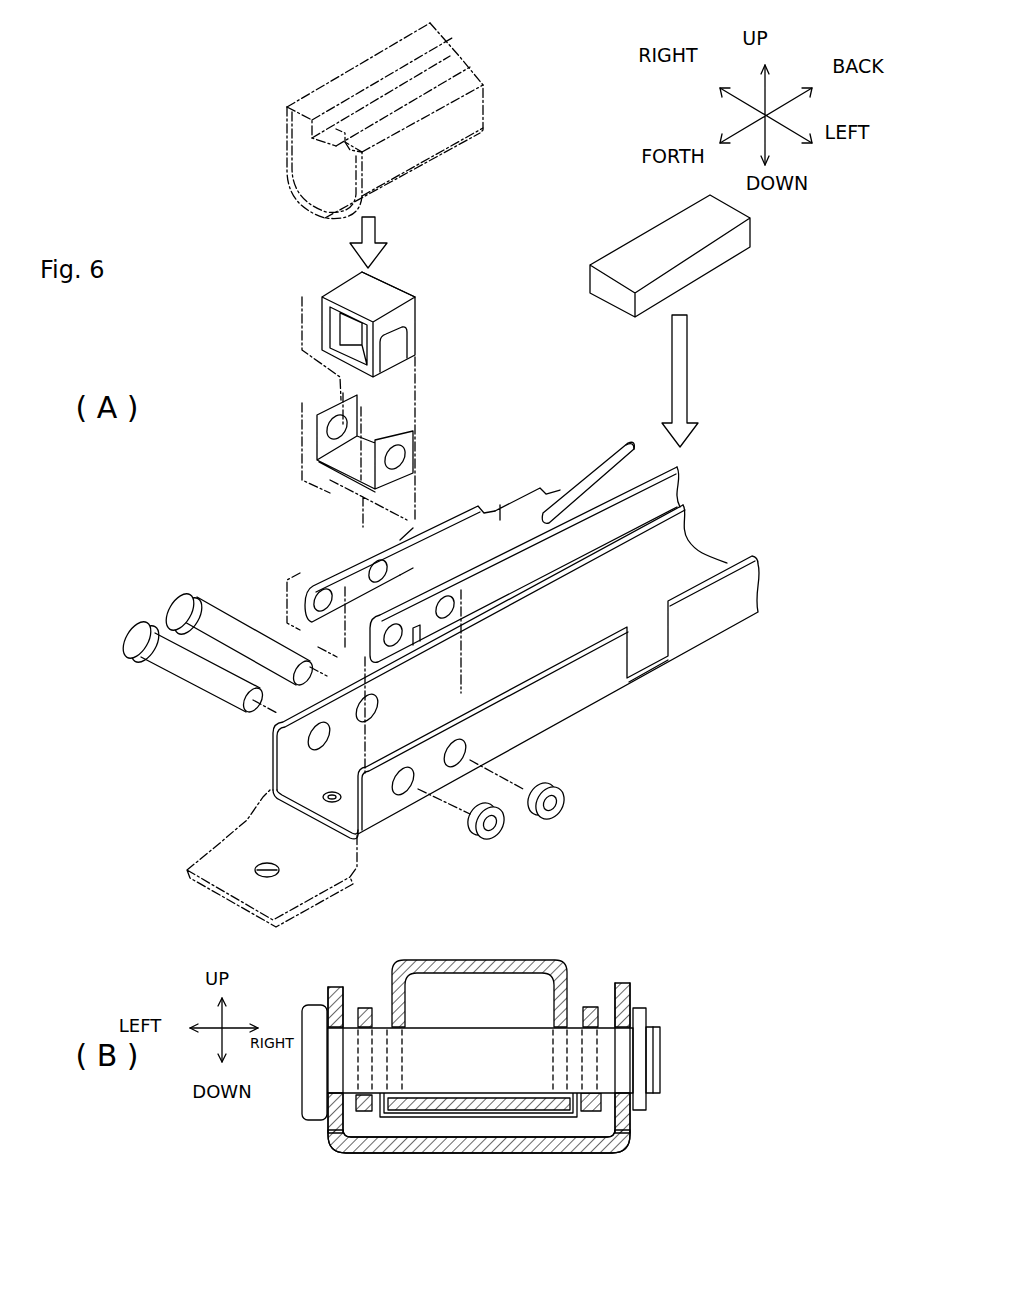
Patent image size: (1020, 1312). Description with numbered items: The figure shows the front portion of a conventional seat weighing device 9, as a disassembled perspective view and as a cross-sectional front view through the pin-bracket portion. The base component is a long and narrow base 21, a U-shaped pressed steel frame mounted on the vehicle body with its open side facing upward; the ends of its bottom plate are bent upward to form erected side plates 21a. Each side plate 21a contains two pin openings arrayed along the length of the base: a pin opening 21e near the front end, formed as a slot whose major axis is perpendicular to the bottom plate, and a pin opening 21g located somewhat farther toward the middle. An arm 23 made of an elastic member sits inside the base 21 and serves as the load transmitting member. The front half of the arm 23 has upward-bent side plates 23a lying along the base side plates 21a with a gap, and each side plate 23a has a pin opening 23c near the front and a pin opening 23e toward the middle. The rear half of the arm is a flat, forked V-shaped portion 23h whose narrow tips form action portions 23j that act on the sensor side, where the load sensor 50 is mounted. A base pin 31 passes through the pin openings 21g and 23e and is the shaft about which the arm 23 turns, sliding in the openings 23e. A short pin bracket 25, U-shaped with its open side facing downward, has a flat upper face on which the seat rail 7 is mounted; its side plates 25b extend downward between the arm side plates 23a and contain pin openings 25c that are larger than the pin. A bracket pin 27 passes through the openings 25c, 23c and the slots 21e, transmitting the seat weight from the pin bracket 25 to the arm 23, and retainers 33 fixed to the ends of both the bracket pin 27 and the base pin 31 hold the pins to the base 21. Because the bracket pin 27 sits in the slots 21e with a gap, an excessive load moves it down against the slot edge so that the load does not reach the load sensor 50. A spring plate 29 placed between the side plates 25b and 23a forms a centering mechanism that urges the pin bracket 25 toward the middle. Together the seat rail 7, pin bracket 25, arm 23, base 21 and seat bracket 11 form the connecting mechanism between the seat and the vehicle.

The seat rail 7 is at (278, 117).
The seat weighing device 9 is at (492, 743).
The seat bracket 11 is at (213, 845).
The base 21 is at (516, 854).
The side plate 21a is at (580, 690).
The pin opening 21e is at (401, 795).
The pin opening 21g is at (465, 748).
The arm 23 is at (514, 743).
The side plate 23a is at (510, 557).
The pin opening 23c is at (317, 592).
The pin opening 23e is at (415, 532).
The V-shaped portion 23h is at (562, 497).
The action portion 23j is at (627, 438).
The pin bracket 25 is at (436, 665).
The side plate 25b is at (423, 313).
The pin opening 25c is at (413, 350).
The bracket pin 27 is at (180, 675).
The spring plate 29 is at (320, 408).
The base pin 31 is at (240, 610).
The retainer 33 is at (575, 800).
The load sensor 50 is at (700, 265).